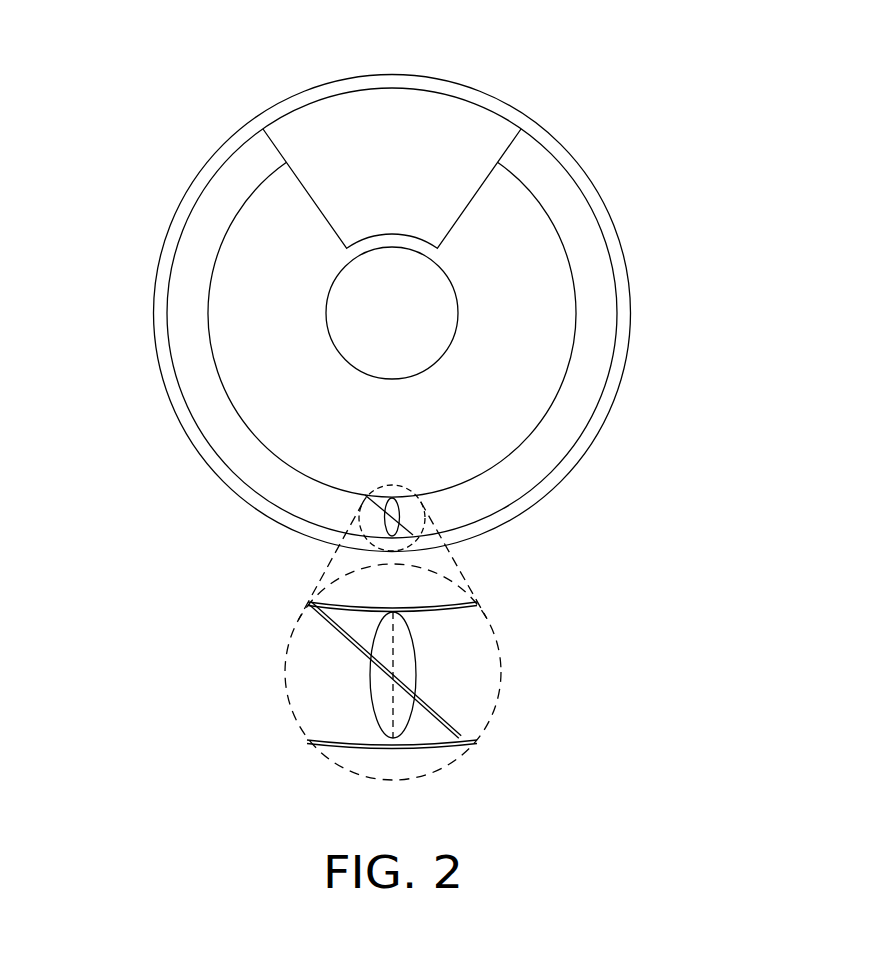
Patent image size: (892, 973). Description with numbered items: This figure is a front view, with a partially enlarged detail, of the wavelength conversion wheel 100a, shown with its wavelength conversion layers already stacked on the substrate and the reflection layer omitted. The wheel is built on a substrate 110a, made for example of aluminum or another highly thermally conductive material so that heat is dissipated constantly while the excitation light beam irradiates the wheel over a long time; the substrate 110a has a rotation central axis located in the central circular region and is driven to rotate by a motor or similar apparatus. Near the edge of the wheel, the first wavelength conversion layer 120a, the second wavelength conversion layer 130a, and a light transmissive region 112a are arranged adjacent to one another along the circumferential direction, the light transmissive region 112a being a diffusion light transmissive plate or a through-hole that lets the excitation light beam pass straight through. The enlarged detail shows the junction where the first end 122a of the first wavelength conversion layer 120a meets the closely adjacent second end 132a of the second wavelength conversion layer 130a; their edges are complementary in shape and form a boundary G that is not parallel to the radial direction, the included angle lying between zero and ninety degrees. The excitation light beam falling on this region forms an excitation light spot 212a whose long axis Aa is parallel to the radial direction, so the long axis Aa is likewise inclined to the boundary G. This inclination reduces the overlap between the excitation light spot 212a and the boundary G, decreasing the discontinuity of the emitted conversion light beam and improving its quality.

The wavelength conversion wheel 100a is at (388, 407).
The substrate 110a is at (547, 285).
The light transmissive region 112a is at (402, 117).
The first wavelength conversion layer 120a is at (190, 323).
The second wavelength conversion layer 130a is at (575, 412).
The first end 122a is at (337, 628).
The second end 132a is at (442, 717).
The excitation light spot 212a is at (380, 712).
The boundary G is at (395, 673).
The long axis Aa is at (427, 723).